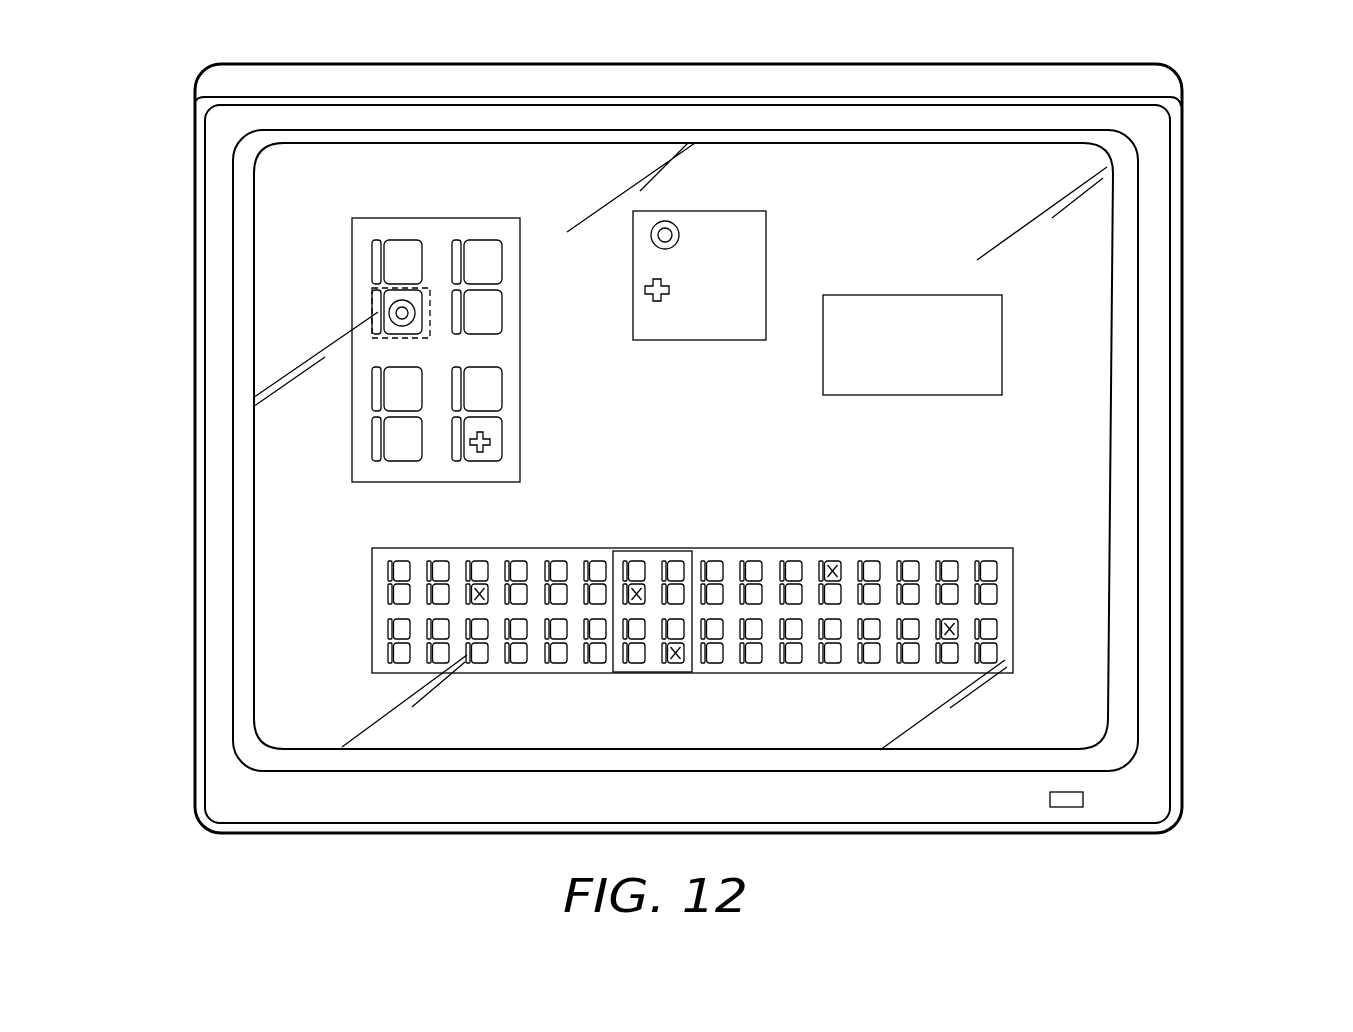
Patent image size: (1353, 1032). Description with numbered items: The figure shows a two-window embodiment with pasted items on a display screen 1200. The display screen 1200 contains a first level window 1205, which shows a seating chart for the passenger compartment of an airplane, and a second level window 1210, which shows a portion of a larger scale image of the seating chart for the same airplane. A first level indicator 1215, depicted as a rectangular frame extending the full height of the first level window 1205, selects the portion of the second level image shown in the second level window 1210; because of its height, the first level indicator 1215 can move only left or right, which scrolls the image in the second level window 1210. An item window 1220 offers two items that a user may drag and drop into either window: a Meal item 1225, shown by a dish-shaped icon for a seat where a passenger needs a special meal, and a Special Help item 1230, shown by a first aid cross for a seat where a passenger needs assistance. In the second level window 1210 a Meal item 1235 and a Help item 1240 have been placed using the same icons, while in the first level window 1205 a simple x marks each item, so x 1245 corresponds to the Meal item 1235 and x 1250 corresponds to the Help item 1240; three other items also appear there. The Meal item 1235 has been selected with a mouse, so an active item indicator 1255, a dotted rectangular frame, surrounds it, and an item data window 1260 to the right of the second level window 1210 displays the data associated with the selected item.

The display screen 1200 is at (1153, 385).
The first level window 1205 is at (726, 601).
The second level window 1210 is at (371, 357).
The first level indicator 1215 is at (655, 551).
The item window 1220 is at (683, 221).
The Meal item 1225 is at (658, 249).
The Special Help item 1230 is at (655, 305).
The Meal item 1235 is at (402, 313).
The Help item 1240 is at (488, 431).
The x 1245 is at (638, 592).
The x 1250 is at (677, 664).
The active item indicator 1255 is at (397, 338).
The item data window 1260 is at (918, 295).